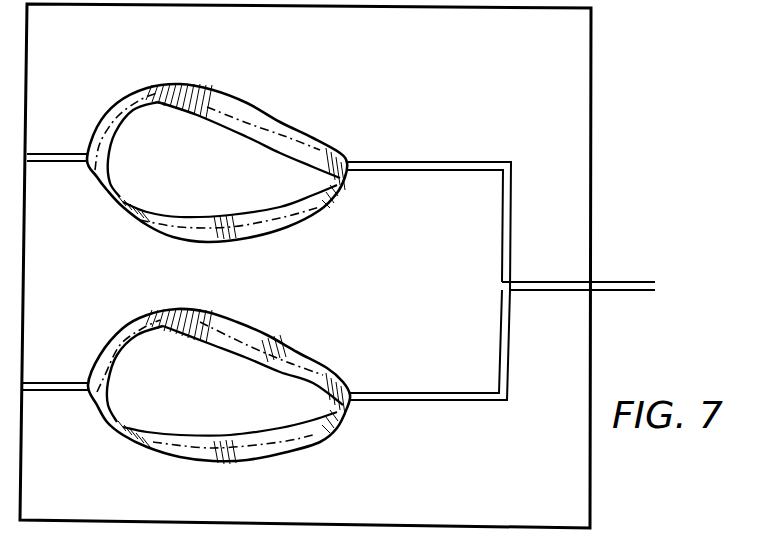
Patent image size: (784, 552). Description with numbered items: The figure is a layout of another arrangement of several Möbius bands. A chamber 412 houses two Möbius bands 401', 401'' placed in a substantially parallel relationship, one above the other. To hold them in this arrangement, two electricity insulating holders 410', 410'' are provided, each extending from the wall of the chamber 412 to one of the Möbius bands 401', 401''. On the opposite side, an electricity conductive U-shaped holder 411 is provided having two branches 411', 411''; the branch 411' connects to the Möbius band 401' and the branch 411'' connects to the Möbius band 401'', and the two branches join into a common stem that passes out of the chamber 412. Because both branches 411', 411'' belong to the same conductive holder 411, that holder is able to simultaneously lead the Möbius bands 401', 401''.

The chamber 412 is at (73, 41).
The electricity insulating holder 410' is at (59, 136).
The electricity insulating holder 410'' is at (61, 364).
The Möbius band 401' is at (217, 154).
The Möbius band 401'' is at (219, 383).
The branch of U-shaped holder 411' is at (429, 209).
The branch of U-shaped holder 411'' is at (430, 345).
The electricity conductive U-shaped holder 411 is at (578, 267).